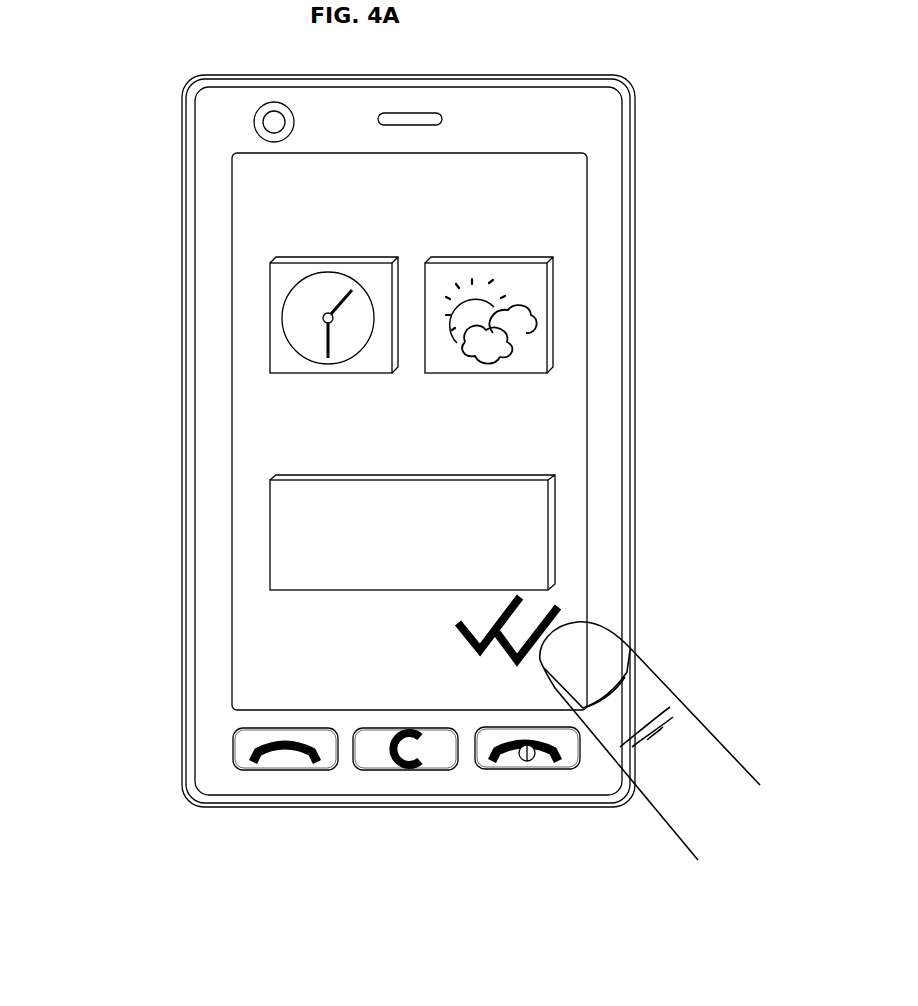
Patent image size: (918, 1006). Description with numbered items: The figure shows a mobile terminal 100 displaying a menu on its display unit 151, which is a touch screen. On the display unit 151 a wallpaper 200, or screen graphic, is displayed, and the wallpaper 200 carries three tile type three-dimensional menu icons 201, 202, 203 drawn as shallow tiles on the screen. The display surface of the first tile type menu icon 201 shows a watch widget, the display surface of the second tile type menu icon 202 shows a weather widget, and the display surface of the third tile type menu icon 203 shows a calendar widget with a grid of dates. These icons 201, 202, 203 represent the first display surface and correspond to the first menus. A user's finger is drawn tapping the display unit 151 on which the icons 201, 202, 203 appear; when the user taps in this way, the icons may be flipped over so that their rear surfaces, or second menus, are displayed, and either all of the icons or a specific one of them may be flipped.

The mobile terminal 100 is at (183, 213).
The display unit 151 is at (585, 585).
The wallpaper 200 is at (572, 183).
The first tile type 3D menu icon 201 is at (273, 313).
The second tile type 3D menu icon 202 is at (550, 307).
The third tile type 3D menu icon 203 is at (547, 530).